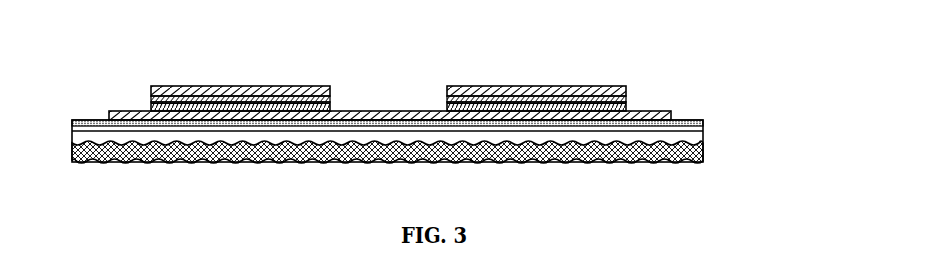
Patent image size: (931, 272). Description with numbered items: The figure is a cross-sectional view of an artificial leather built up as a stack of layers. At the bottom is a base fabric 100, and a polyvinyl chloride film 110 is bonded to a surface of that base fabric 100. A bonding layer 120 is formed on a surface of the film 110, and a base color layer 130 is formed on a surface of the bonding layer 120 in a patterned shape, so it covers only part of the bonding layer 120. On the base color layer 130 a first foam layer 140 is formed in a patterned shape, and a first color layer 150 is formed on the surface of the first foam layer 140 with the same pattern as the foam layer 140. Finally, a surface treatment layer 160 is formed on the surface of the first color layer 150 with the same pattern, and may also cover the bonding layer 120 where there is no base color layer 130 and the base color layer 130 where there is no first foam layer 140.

The base fabric 100 is at (703, 157).
The polyvinyl chloride film 110 is at (703, 138).
The bonding layer 120 is at (703, 123).
The base color layer 130 is at (657, 111).
The first foam layer 140 is at (606, 106).
The first color layer 150 is at (530, 98).
The surface treatment layer 160 is at (461, 88).